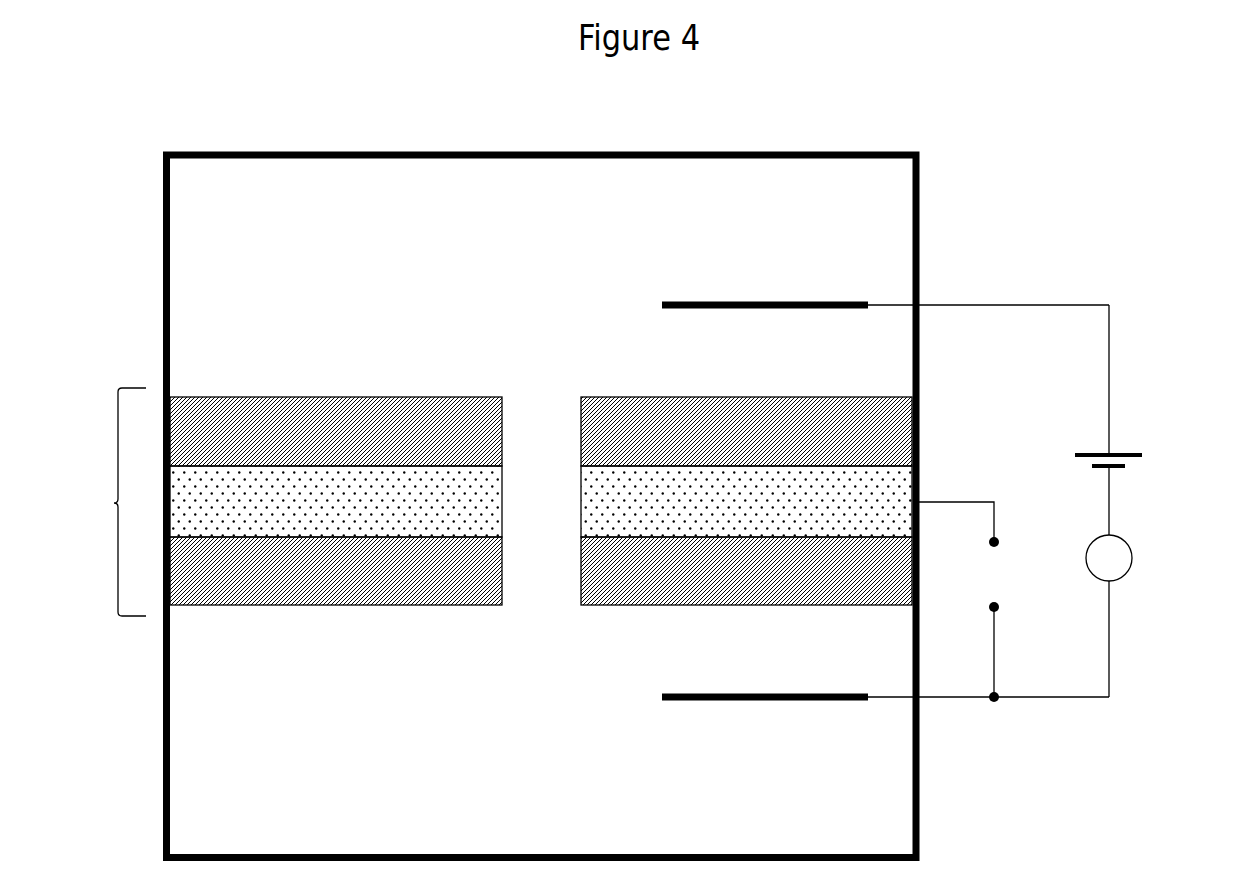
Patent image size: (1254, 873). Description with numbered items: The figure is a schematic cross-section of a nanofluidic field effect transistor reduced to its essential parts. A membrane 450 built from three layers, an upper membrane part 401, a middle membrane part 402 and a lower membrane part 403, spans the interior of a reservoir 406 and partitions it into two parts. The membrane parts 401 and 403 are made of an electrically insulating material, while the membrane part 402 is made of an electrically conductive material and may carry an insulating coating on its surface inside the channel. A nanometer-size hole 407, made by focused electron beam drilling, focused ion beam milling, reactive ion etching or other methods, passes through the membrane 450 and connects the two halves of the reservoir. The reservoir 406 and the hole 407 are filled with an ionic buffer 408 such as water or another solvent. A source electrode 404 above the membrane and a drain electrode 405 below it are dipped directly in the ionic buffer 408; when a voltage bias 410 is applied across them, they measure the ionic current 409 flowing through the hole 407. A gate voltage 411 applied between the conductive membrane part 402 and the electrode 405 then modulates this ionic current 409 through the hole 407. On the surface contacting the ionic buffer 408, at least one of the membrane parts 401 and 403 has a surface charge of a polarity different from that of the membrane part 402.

The membrane part 401 is at (541, 431).
The membrane part 402 is at (541, 501).
The membrane part 403 is at (541, 571).
The source electrode 404 is at (884, 283).
The drain electrode 405 is at (885, 676).
The reservoir 406 is at (921, 812).
The hole 407 is at (525, 373).
The ionic buffer 408 is at (541, 506).
The ionic current 409 is at (1148, 556).
The voltage bias 410 is at (1146, 443).
The gate voltage 411 is at (999, 520).
The membrane 450 is at (113, 503).